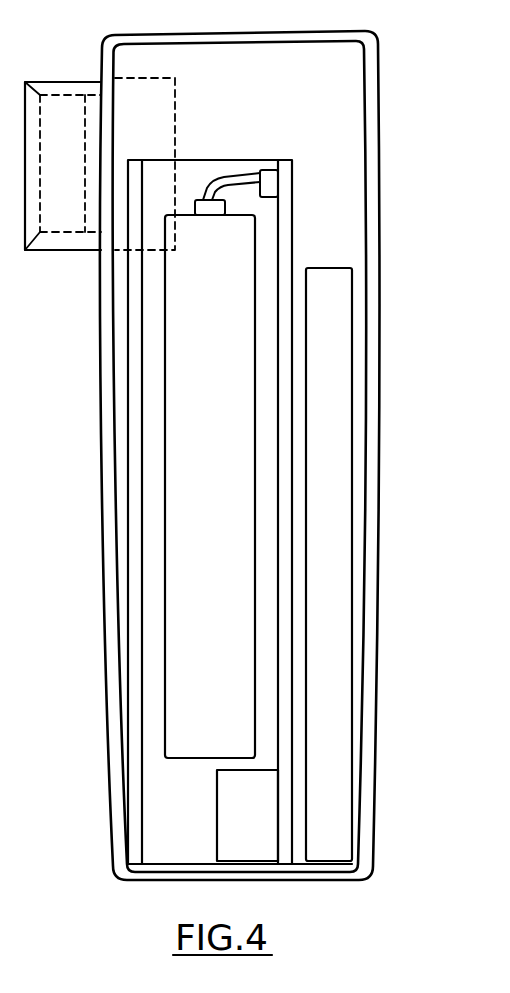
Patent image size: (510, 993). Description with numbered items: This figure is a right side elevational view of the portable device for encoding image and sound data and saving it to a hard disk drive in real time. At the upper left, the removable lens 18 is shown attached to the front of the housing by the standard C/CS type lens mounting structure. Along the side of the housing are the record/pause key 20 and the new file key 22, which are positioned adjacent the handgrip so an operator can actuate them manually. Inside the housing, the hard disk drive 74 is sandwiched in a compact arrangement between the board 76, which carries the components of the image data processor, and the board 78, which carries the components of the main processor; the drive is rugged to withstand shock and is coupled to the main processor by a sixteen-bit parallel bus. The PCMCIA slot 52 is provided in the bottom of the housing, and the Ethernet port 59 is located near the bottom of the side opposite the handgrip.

The removable lens 18 is at (57, 120).
The record/pause key 20 is at (99, 310).
The new file key 22 is at (100, 418).
The PCMCIA slot 52 is at (340, 315).
The Ethernet port 59 is at (248, 819).
The hard disk drive 74 is at (185, 552).
The board 76 is at (135, 645).
The board 78 is at (287, 463).